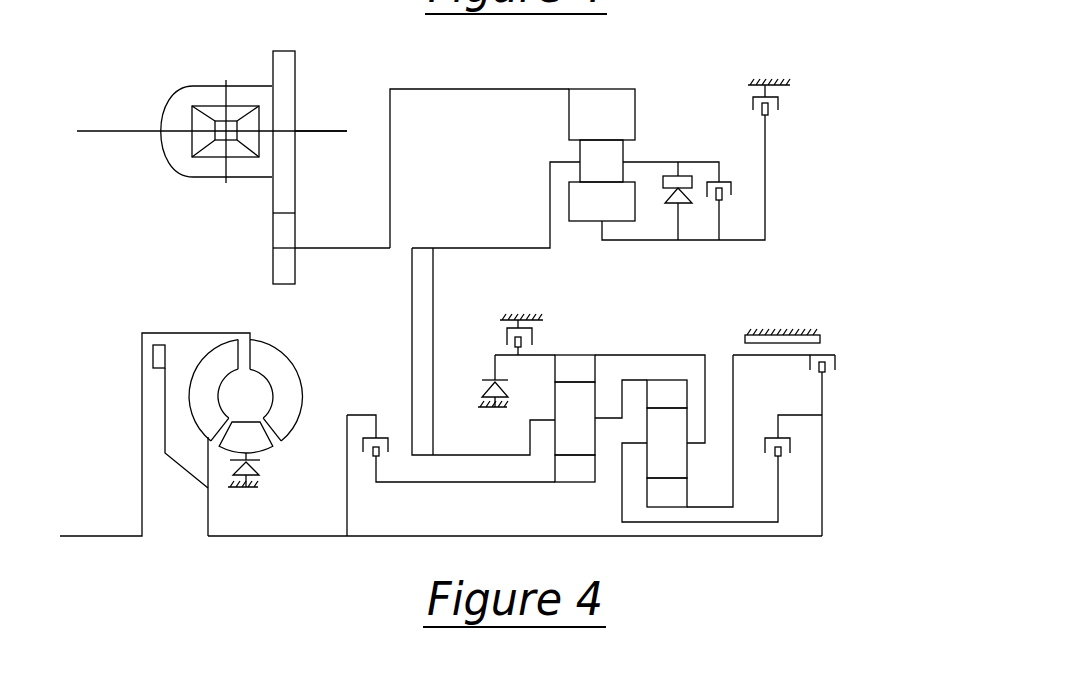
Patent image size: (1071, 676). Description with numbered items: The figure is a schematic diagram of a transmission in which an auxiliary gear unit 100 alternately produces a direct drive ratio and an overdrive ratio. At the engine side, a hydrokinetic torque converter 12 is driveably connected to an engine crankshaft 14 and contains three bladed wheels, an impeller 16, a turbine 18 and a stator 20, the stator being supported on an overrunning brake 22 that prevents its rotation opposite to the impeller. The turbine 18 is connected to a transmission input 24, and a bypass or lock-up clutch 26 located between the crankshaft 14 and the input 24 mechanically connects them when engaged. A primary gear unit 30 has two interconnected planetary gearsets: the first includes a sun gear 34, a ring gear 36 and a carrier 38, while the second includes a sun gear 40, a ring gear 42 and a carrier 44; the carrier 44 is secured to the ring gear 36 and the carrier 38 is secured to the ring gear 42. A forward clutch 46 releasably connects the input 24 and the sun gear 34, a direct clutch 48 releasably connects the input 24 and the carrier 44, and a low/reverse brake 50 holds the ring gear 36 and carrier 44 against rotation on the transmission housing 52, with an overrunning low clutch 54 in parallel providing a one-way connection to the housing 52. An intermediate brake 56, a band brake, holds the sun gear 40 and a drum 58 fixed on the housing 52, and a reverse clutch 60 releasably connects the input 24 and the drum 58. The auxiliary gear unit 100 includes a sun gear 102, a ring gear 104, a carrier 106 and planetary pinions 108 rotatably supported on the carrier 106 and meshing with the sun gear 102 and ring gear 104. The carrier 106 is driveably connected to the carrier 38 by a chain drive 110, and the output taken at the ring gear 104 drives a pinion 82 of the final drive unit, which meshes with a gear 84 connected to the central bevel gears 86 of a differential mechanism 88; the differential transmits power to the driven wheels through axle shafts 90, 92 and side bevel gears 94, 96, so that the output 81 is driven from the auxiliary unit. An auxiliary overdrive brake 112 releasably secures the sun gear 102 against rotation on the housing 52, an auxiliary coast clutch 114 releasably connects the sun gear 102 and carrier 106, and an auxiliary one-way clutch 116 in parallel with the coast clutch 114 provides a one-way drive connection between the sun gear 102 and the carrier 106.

The hydrokinetic torque converter 12 is at (274, 339).
The engine crankshaft 14 is at (107, 536).
The impeller 16 is at (287, 393).
The turbine 18 is at (208, 380).
The stator 20 is at (250, 437).
The overrunning brake 22 is at (257, 470).
The transmission input 24 is at (303, 537).
The bypass or lock-up clutch 26 is at (153, 358).
The primary gear unit 30 is at (539, 495).
The sun gear 34 is at (578, 477).
The ring gear 36 is at (578, 358).
The carrier 38 is at (547, 417).
The sun gear 40 is at (557, 437).
The ring gear 42 is at (670, 380).
The carrier 44 is at (695, 447).
The forward clutch 46 is at (373, 453).
The direct clutch 48 is at (781, 457).
The low/reverse brake 50 is at (515, 348).
The transmission housing 52 is at (757, 80).
The overrunning low clutch 54 is at (485, 398).
The intermediate brake 56 is at (780, 330).
The drum 58 is at (757, 358).
The reverse clutch 60 is at (827, 368).
The output 81 is at (488, 248).
The pinion 82 is at (280, 230).
The gear 84 is at (287, 78).
The central bevel gears 86 is at (215, 110).
The differential mechanism 88 is at (226, 57).
The axle shaft 90 is at (318, 132).
The axle shaft 92 is at (113, 132).
The side bevel gear 94 is at (248, 123).
The side bevel gear 96 is at (203, 125).
The auxiliary gear unit 100 is at (836, 74).
The sun gear 102 is at (585, 213).
The ring gear 104 is at (602, 92).
The carrier 106 is at (568, 159).
The planetary pinions 108 is at (623, 152).
The chain drive 110 is at (427, 333).
The auxiliary overdrive brake 112 is at (767, 115).
The auxiliary coast clutch 114 is at (720, 202).
The auxiliary one-way clutch 116 is at (663, 182).